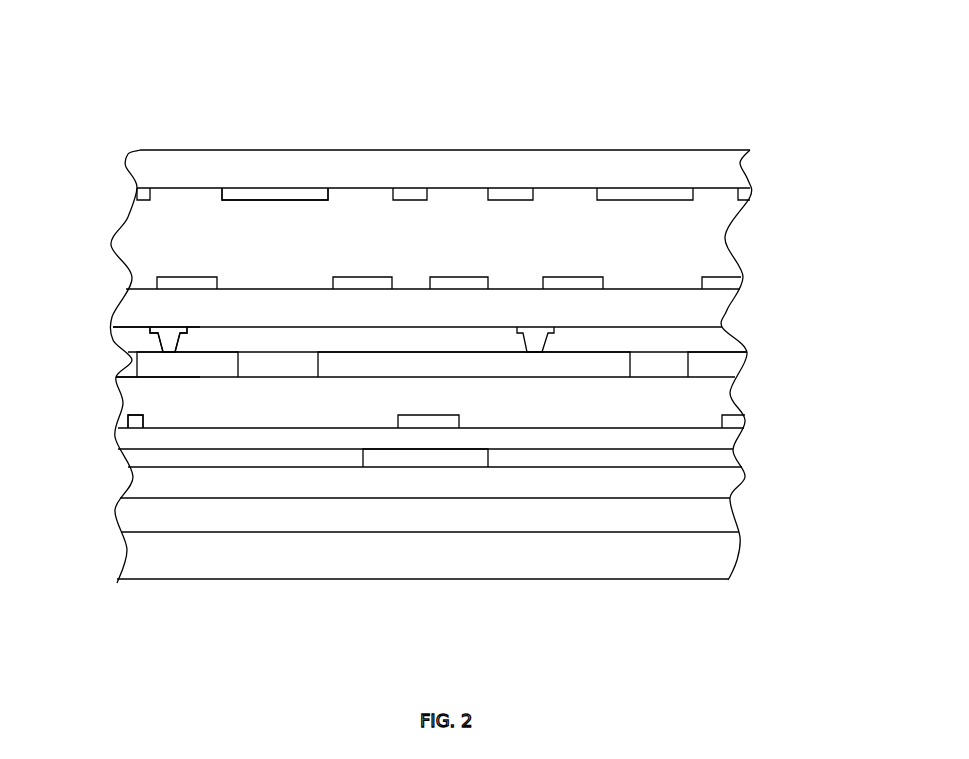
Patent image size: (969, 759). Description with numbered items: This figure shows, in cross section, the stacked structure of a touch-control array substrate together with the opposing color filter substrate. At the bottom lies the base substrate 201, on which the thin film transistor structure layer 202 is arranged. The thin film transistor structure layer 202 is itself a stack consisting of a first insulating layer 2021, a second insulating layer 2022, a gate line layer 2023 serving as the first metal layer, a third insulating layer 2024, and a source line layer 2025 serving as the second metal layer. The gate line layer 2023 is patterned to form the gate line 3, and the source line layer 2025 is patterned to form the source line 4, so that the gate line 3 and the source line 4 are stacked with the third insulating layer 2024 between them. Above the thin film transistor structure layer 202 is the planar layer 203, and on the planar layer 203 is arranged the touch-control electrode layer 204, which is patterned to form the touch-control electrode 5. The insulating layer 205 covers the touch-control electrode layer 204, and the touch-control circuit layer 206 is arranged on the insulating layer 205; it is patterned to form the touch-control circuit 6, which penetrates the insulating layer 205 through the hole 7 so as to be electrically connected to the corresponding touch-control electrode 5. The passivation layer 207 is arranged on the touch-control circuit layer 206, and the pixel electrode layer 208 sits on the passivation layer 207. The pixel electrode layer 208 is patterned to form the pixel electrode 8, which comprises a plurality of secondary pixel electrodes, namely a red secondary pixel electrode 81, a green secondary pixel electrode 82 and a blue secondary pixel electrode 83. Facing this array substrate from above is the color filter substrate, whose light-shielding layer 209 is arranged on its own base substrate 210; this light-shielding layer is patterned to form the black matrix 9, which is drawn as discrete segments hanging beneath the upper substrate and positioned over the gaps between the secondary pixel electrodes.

The gate line 3 is at (405, 458).
The source line 4 is at (128, 417).
The touch-control electrode 5 is at (150, 365).
The touch-control circuit 6 is at (167, 330).
The hole 7 is at (155, 338).
The pixel electrode 8 is at (468, 168).
The red secondary pixel electrode 81 is at (367, 277).
The green secondary pixel electrode 82 is at (460, 277).
The blue secondary pixel electrode 83 is at (577, 277).
The black matrix 9 is at (262, 200).
The base substrate 201 is at (722, 567).
The thin film transistor structure layer 202 is at (481, 519).
The first insulating layer 2021 is at (481, 524).
The second insulating layer 2022 is at (722, 493).
The gate line layer 2023 is at (730, 460).
The third insulating layer 2024 is at (732, 438).
The source line layer 2025 is at (740, 420).
The planar layer 203 is at (723, 393).
The touch-control electrode layer 204 is at (737, 365).
The insulating layer 205 is at (723, 335).
The touch-control circuit layer 206 is at (150, 328).
The passivation layer 207 is at (710, 311).
The pixel electrode layer 208 is at (470, 168).
The light-shielding layer 209 is at (728, 178).
The base substrate 210 is at (745, 200).